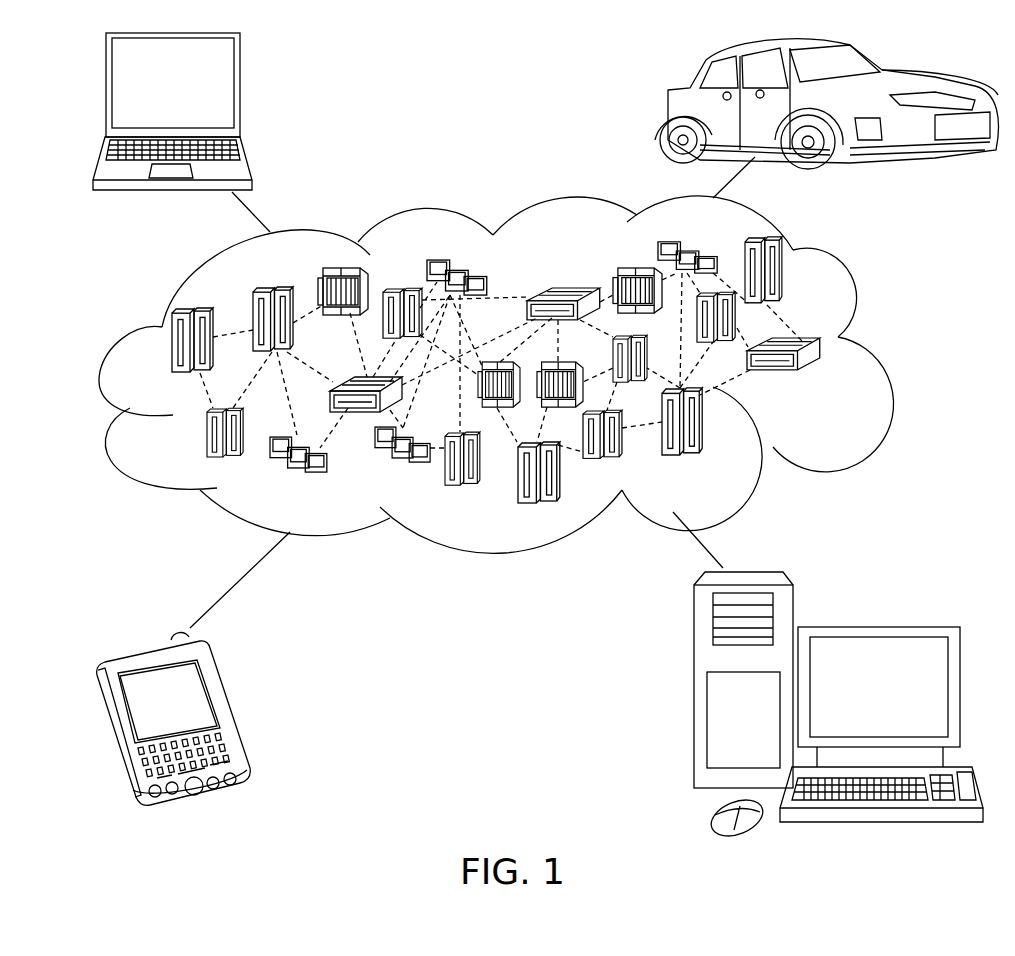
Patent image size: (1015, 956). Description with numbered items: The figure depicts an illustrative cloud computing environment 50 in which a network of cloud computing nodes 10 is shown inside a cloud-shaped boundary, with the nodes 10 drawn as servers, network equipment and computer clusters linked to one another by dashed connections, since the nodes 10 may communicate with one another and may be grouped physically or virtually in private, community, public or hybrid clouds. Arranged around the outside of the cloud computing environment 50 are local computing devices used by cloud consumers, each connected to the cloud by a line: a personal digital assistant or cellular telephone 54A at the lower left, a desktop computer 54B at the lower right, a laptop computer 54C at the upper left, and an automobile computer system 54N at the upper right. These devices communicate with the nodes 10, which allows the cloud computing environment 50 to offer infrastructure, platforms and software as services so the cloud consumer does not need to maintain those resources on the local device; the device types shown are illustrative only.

The laptop computer 54C is at (240, 92).
The automobile computer system 54N is at (664, 108).
The personal digital assistant (PDA) or cellular telephone 54A is at (228, 712).
The desktop computer 54B is at (877, 625).
The cloud computing environment 50 is at (517, 375).
The cloud computing node 10 is at (820, 379).